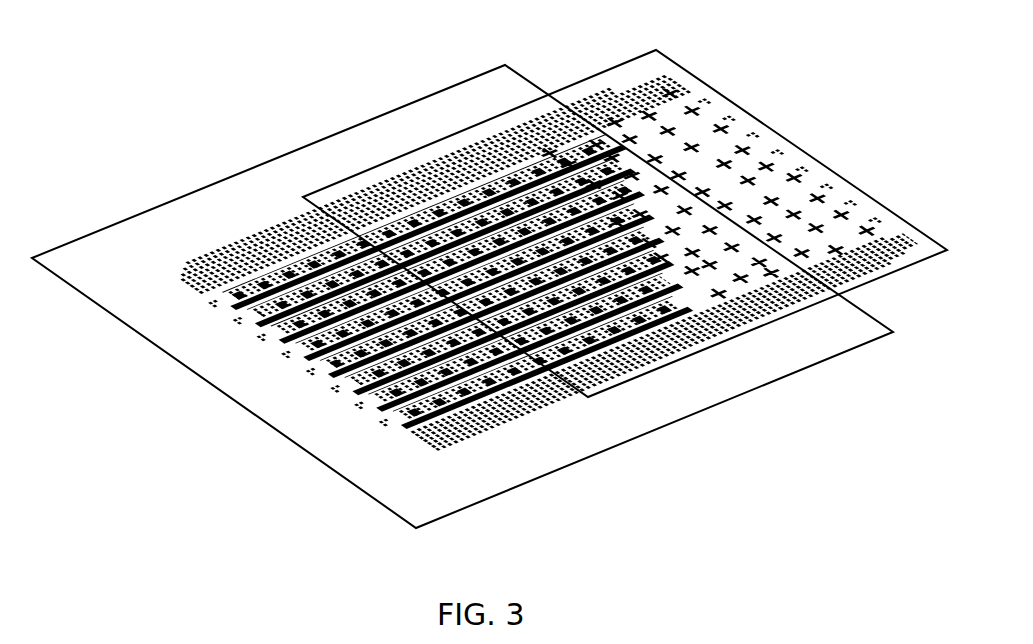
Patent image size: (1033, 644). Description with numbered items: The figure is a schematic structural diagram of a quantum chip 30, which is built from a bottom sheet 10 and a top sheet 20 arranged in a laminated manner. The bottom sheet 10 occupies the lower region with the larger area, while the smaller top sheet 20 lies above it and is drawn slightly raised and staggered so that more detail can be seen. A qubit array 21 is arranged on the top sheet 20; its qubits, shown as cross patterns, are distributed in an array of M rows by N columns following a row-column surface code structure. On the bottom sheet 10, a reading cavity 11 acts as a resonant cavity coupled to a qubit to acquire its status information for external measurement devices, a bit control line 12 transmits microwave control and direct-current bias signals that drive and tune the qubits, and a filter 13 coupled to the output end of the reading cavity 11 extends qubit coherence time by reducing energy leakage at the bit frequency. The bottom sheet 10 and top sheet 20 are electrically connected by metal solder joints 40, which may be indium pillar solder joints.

The quantum chip 30 is at (78, 40).
The bottom sheet 10 is at (207, 200).
The top sheet 20 is at (633, 70).
The qubit array 21 is at (713, 175).
The metal solder joints 40 is at (583, 100).
The reading cavity 11 is at (283, 330).
The bit control line 12 is at (333, 382).
The filter 13 is at (247, 323).